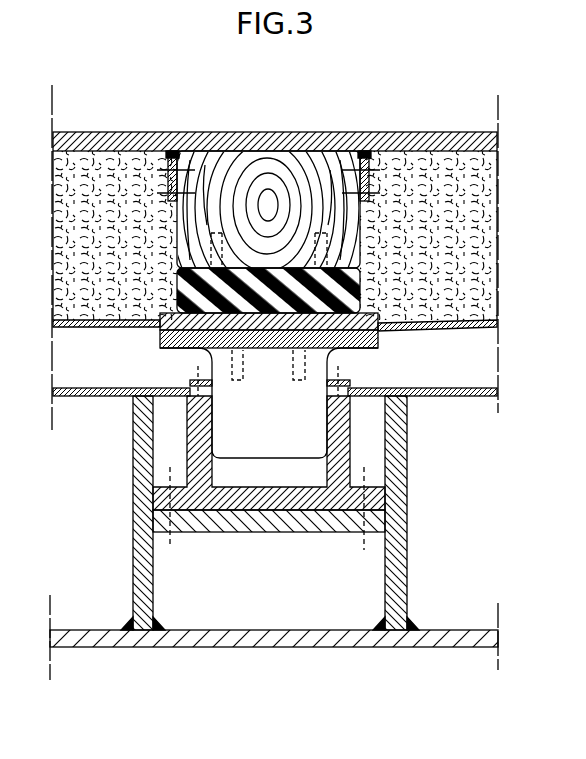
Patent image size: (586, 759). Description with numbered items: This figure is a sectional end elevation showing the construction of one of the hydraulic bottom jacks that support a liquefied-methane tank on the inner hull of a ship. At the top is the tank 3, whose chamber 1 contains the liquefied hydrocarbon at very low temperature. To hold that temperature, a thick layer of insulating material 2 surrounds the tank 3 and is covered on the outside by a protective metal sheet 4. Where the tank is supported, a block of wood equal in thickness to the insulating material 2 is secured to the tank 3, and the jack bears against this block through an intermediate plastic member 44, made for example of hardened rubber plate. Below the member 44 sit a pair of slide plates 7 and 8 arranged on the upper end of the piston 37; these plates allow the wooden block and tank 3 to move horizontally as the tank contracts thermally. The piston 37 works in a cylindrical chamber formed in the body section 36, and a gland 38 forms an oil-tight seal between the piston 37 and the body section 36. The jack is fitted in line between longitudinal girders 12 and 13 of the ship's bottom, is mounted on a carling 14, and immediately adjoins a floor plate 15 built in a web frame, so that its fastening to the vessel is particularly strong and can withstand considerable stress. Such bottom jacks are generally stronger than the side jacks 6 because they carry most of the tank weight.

The chamber 1 is at (101, 107).
The insulating material 2 is at (102, 210).
The tank 3 is at (118, 140).
The outer protective metal sheet 4 is at (407, 327).
The side jack 6 is at (268, 208).
The slide plate 7 is at (200, 318).
The slide plate 8 is at (207, 337).
The longitudinal girder 12 is at (143, 494).
The longitudinal girder 13 is at (397, 516).
The carling 14 is at (283, 522).
The floor plate 15 is at (427, 395).
The body section 36 is at (313, 512).
The piston 37 is at (243, 408).
The gland 38 is at (345, 381).
The intermediate plastic member 44 is at (178, 279).